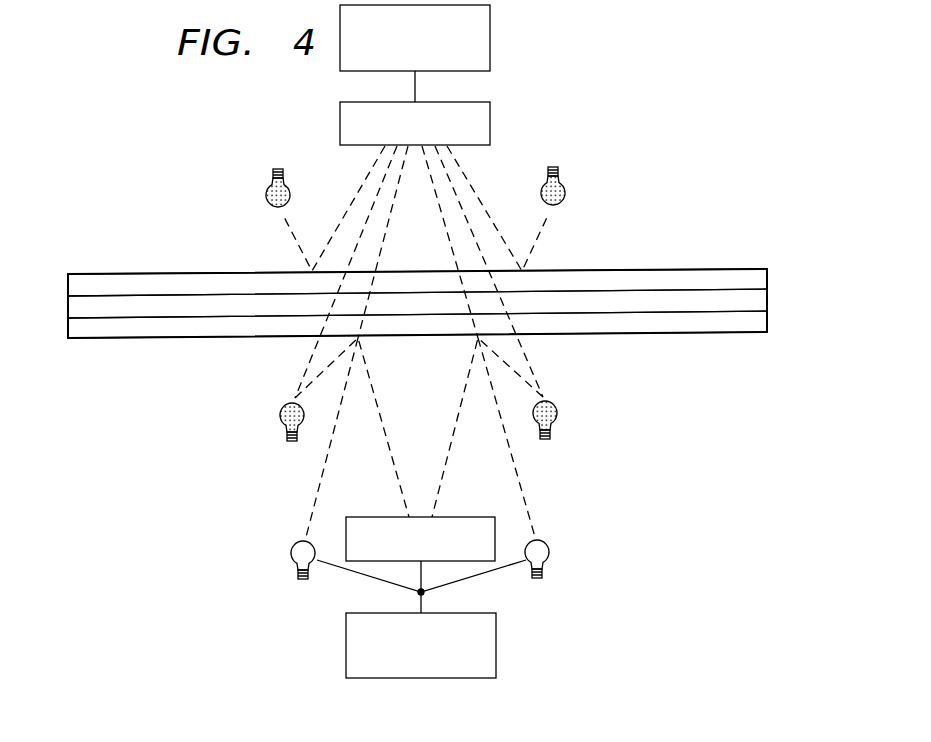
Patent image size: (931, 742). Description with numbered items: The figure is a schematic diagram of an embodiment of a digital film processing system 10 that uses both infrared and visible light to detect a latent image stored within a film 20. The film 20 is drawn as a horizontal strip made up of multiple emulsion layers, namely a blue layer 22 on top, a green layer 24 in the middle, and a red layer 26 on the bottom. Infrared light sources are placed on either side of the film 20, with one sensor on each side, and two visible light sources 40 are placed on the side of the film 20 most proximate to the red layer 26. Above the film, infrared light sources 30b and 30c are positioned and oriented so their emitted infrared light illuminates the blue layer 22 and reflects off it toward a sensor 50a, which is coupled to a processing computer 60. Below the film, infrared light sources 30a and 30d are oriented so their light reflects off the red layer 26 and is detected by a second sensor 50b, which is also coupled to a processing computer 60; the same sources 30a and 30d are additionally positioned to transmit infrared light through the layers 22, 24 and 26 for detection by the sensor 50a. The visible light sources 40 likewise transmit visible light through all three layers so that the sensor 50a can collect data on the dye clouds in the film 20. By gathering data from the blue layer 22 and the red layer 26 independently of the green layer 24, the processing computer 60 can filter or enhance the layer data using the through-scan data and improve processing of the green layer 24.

The digital film processing system 10 is at (699, 59).
The film 20 is at (776, 332).
The blue layer 22 is at (77, 282).
The green layer 24 is at (70, 309).
The red layer 26 is at (78, 340).
The infrared light source 30a is at (289, 447).
The infrared light source 30b is at (276, 213).
The infrared light source 30c is at (559, 208).
The infrared light source 30d is at (548, 446).
The visible light source 40 is at (305, 583).
The sensor 50a is at (490, 120).
The sensor 50b is at (466, 517).
The processing computer 60 is at (490, 35).